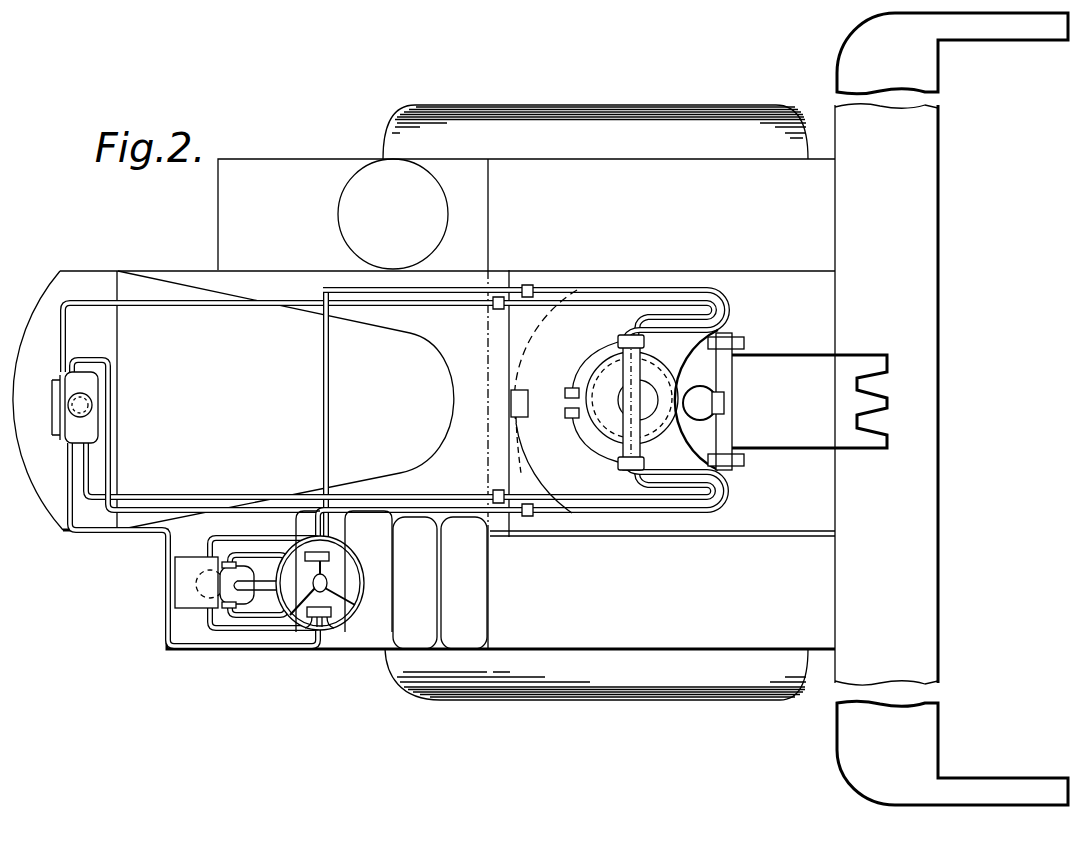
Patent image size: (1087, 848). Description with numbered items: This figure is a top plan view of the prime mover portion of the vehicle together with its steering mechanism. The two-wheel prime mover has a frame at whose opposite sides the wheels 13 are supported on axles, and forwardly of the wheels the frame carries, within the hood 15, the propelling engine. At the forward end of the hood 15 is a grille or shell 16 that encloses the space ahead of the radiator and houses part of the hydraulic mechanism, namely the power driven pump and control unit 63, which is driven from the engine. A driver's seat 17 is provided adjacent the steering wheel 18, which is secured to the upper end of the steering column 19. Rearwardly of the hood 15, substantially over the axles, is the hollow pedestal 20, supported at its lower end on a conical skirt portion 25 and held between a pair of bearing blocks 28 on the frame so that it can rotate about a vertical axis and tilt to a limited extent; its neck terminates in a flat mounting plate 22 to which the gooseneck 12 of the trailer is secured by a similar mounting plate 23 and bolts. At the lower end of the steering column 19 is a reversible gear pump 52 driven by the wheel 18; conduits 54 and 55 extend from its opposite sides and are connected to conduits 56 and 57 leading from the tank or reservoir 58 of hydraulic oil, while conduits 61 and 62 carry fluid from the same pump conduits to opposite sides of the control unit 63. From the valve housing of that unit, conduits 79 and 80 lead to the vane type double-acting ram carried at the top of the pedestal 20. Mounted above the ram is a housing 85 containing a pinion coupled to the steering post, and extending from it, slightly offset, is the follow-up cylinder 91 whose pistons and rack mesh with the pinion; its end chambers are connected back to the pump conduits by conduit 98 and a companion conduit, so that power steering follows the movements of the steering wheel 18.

The gooseneck 12 is at (786, 372).
The wheels 13 is at (610, 113).
The hood 15 is at (285, 400).
The grille or shell 16 is at (58, 268).
The operator's seat 17 is at (455, 582).
The steering wheel 18 is at (348, 548).
The steering column 19 is at (280, 583).
The pedestal 20 is at (692, 460).
The mounting plate 22 is at (735, 343).
The mounting plate 23 is at (732, 360).
The conical skirt portion 25 is at (544, 401).
The bearing blocks 28 is at (522, 440).
The reversible gear pump 52 is at (222, 586).
The conduit 54 is at (258, 606).
The conduit 55 is at (262, 555).
The conduit 56 is at (242, 630).
The conduit 57 is at (218, 542).
The tank or reservoir 58 is at (185, 594).
The conduit 61 is at (208, 648).
The conduit 62 is at (112, 450).
The power driven pump and control unit 63 is at (58, 407).
The conduit 79 is at (205, 307).
The conduit 80 is at (195, 500).
The housing 85 is at (648, 340).
The cylinder 91 is at (626, 440).
The conduit 98 is at (560, 508).